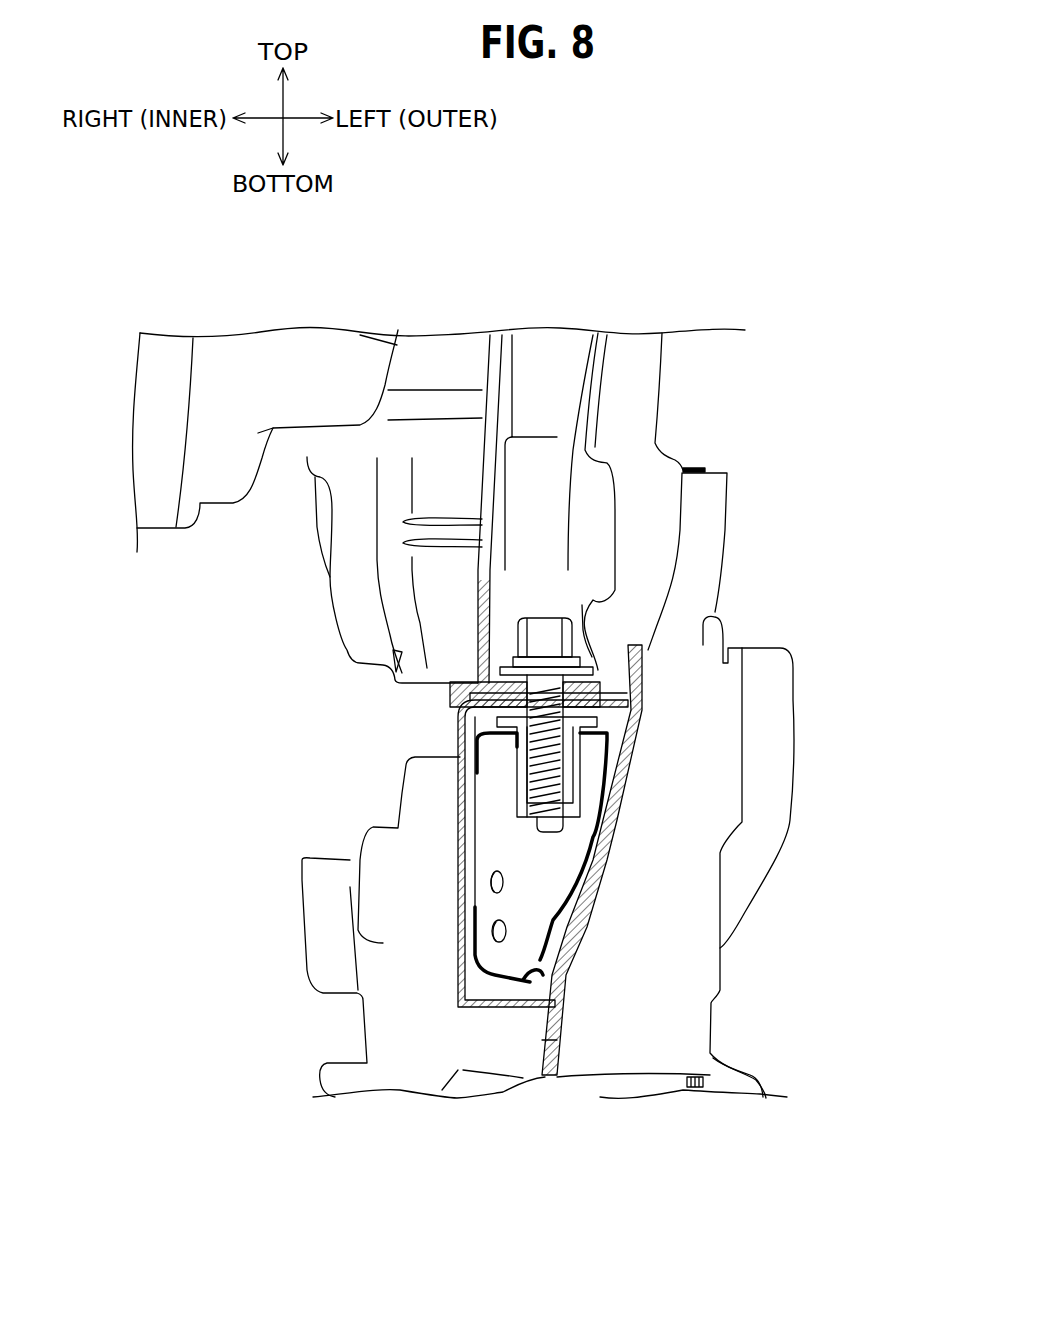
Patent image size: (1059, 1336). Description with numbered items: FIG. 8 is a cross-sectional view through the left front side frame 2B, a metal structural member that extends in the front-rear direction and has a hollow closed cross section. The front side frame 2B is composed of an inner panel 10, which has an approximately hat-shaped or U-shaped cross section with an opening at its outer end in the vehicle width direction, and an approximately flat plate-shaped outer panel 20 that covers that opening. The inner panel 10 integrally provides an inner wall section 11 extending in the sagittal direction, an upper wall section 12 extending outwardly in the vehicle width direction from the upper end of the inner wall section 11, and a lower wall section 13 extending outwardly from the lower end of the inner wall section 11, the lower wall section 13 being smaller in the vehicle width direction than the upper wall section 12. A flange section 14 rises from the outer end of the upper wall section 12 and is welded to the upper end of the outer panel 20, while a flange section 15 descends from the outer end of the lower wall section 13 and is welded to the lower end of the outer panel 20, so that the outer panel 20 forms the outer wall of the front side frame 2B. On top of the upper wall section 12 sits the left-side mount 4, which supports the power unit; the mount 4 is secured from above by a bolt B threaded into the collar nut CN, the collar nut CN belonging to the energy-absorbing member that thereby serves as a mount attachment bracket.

The flange section 14 is at (627, 663).
The mount 4 is at (450, 705).
The upper wall section 12 is at (470, 700).
The inner wall section 11 is at (460, 803).
The inner panel 10 is at (412, 948).
The lower wall section 13 is at (510, 1010).
The flange section 15 is at (545, 1047).
The outer panel 20 is at (600, 867).
The front side frame 2B is at (588, 1022).
The bolt B is at (547, 673).
The collar nut CN is at (585, 720).